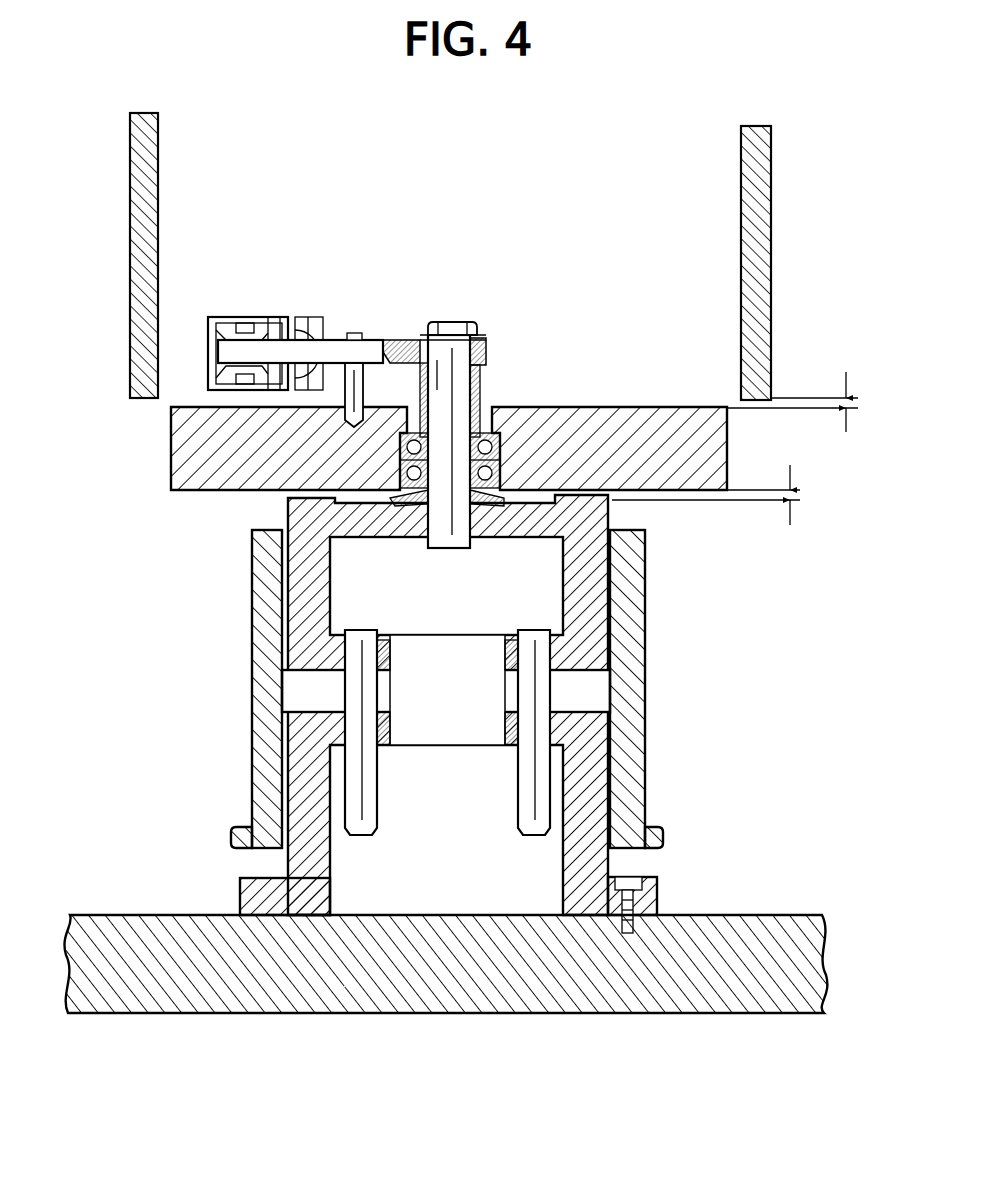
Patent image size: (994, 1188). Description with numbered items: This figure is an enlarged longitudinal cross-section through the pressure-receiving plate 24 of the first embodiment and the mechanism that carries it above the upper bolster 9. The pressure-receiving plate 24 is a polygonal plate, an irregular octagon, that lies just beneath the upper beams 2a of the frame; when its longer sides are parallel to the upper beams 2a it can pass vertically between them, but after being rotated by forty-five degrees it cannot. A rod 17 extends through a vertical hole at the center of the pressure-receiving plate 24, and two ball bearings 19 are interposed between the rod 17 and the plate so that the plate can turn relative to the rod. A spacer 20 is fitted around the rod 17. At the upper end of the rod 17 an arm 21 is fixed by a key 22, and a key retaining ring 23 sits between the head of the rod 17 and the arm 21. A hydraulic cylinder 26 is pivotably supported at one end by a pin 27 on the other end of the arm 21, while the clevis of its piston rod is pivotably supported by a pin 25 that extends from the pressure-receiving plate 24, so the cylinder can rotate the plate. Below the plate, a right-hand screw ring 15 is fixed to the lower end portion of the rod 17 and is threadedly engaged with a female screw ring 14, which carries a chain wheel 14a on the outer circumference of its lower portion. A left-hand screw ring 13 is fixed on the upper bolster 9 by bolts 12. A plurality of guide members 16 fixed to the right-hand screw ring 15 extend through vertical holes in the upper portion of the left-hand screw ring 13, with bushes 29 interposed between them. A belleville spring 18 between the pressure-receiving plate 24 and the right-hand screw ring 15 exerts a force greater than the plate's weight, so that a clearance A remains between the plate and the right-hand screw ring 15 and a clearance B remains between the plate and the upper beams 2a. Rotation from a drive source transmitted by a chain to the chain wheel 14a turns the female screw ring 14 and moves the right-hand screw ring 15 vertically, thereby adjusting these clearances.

The upper beams 2a is at (158, 150).
The upper bolster 9 is at (93, 915).
The bolts 12 is at (650, 873).
The left-hand screw ring 13 is at (262, 878).
The female screw ring 14 is at (645, 772).
The chain wheel 14a is at (665, 828).
The right-hand screw ring 15 is at (612, 512).
The guide members 16 is at (516, 822).
The rod 17 is at (447, 320).
The belleville spring 18 is at (472, 498).
The ball bearings 19 is at (494, 410).
The spacer 20 is at (483, 382).
The arm 21 is at (393, 339).
The key 22 is at (423, 337).
The key retaining ring 23 is at (478, 333).
The pressure-receiving plate 24 is at (171, 452).
The pin 25 is at (352, 333).
The hydraulic cylinder 26 is at (222, 317).
The pin 27 is at (243, 321).
The bushes 29 is at (507, 746).
The clearance A is at (800, 495).
The clearance B is at (858, 403).